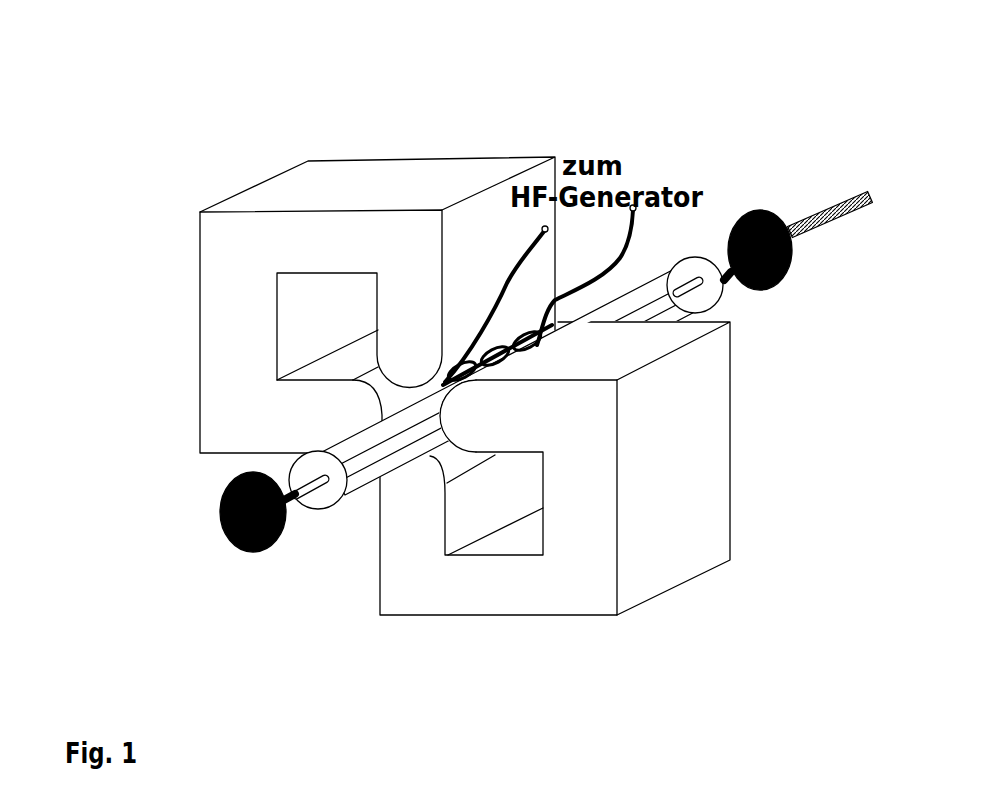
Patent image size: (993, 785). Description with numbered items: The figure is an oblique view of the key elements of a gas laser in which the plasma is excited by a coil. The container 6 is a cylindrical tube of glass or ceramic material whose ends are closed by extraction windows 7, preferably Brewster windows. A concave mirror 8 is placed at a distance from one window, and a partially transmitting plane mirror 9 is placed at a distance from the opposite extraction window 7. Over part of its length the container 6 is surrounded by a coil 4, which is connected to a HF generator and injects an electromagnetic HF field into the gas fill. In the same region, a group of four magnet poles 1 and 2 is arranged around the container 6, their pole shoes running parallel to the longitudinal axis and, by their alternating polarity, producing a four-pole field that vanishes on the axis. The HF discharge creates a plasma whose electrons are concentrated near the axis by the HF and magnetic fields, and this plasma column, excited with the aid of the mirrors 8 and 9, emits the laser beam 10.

The magnet pole 1 is at (398, 331).
The magnet pole 2 is at (307, 437).
The coil 4 is at (585, 320).
The container 6 is at (632, 288).
The extraction window 7 is at (337, 502).
The concave mirror 8 is at (222, 527).
The partially transmitting plane mirror 9 is at (793, 265).
The laser beam 10 is at (838, 205).